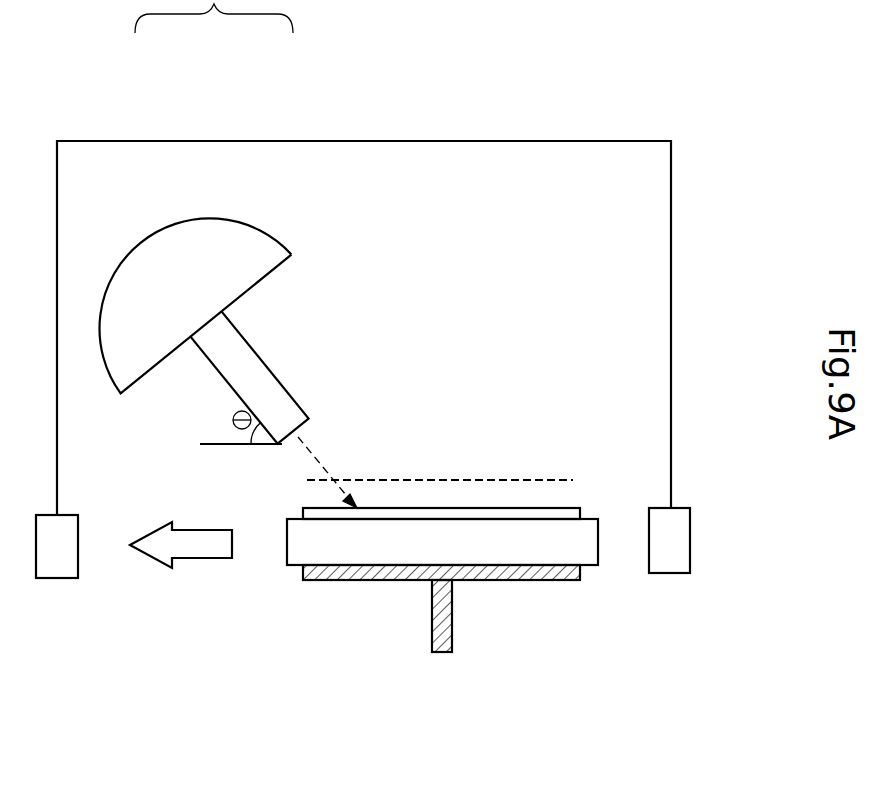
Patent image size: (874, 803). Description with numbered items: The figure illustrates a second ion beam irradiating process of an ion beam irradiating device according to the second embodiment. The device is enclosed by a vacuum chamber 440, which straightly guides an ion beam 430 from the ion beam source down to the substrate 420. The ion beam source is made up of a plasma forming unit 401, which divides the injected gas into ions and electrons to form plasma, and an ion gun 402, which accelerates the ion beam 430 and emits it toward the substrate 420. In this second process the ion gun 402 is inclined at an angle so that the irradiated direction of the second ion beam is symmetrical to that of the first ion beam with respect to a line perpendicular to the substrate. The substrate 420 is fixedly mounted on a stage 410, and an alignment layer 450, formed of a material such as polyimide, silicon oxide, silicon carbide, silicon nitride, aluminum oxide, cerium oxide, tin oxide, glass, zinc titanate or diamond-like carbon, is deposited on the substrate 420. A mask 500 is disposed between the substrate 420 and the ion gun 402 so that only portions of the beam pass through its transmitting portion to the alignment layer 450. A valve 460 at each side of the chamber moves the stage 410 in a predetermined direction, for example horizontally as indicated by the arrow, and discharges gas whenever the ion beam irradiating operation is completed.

The plasma forming unit 401 is at (180, 215).
The ion gun 402 is at (315, 265).
The stage 410 is at (448, 612).
The substrate 420 is at (317, 552).
The ion beam 430 is at (320, 460).
The vacuum chamber 440 is at (405, 138).
The alignment layer 450 is at (553, 508).
The valve 460 is at (53, 578).
The mask 500 is at (477, 477).